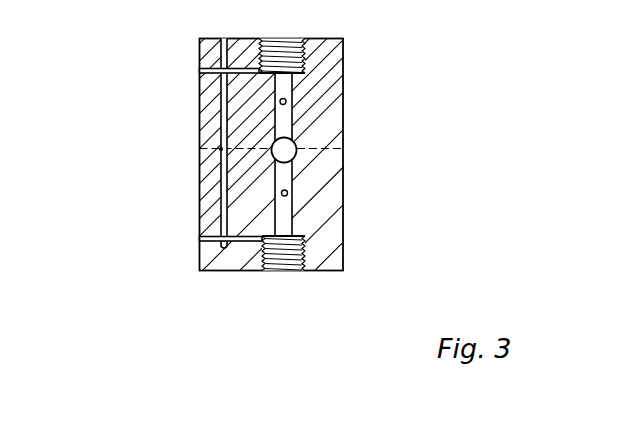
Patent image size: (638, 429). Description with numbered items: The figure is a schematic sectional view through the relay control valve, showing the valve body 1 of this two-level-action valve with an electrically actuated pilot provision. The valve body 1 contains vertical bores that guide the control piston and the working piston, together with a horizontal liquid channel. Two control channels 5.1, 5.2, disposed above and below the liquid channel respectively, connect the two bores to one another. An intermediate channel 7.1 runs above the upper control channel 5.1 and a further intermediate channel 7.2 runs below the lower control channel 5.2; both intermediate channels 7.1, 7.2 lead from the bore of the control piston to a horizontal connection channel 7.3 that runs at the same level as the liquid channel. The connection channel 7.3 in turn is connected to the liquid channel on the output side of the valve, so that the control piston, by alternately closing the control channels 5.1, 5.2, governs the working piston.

The valve body 1 is at (317, 147).
The control channel 5.1 is at (286, 100).
The control channel 5.2 is at (288, 194).
The intermediate channel 7.1 is at (226, 103).
The intermediate channel 7.2 is at (200, 240).
The connection channel 7.3 is at (221, 149).